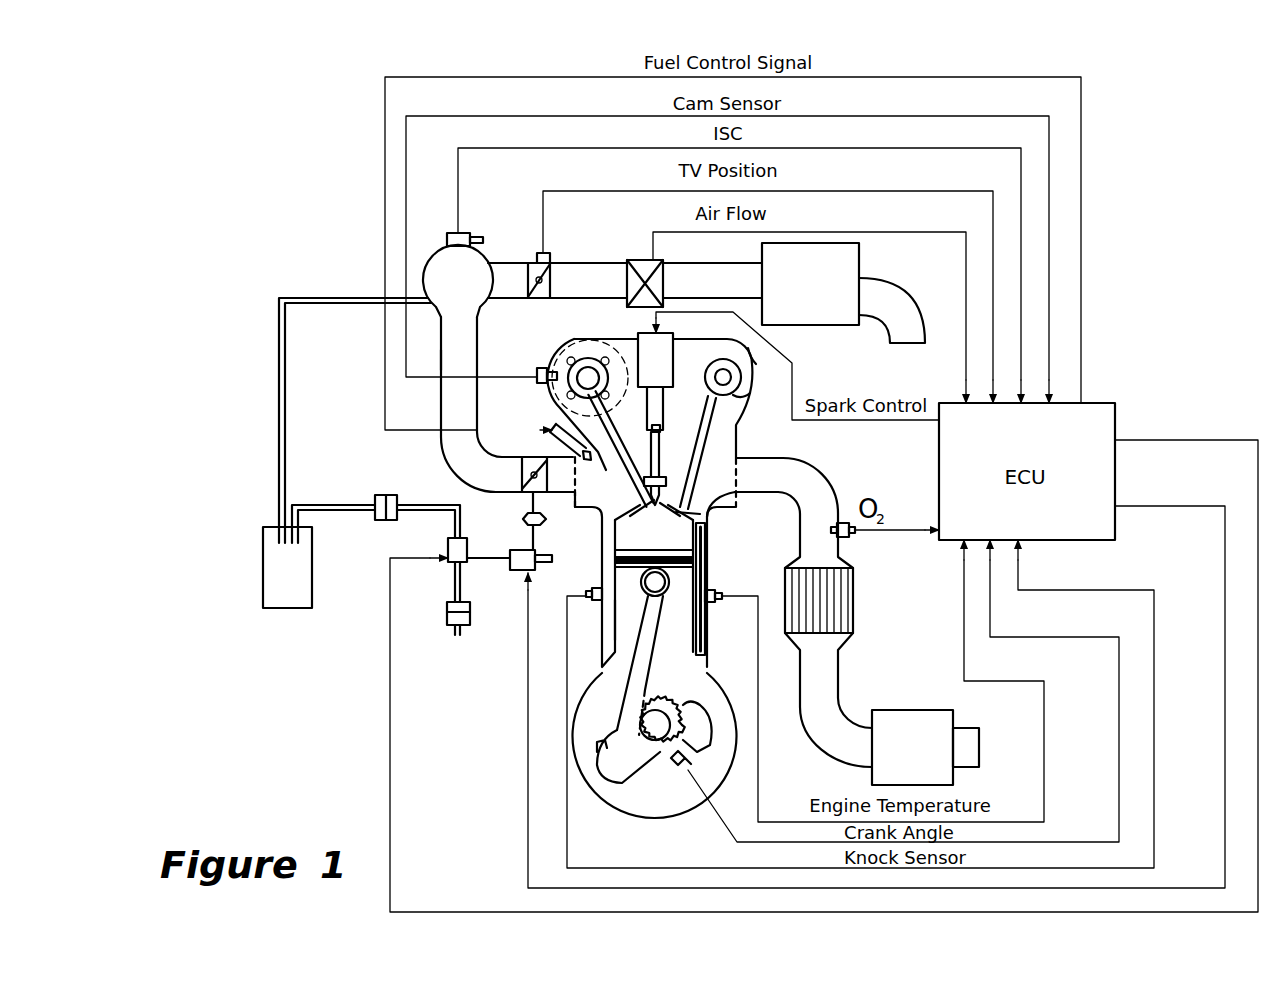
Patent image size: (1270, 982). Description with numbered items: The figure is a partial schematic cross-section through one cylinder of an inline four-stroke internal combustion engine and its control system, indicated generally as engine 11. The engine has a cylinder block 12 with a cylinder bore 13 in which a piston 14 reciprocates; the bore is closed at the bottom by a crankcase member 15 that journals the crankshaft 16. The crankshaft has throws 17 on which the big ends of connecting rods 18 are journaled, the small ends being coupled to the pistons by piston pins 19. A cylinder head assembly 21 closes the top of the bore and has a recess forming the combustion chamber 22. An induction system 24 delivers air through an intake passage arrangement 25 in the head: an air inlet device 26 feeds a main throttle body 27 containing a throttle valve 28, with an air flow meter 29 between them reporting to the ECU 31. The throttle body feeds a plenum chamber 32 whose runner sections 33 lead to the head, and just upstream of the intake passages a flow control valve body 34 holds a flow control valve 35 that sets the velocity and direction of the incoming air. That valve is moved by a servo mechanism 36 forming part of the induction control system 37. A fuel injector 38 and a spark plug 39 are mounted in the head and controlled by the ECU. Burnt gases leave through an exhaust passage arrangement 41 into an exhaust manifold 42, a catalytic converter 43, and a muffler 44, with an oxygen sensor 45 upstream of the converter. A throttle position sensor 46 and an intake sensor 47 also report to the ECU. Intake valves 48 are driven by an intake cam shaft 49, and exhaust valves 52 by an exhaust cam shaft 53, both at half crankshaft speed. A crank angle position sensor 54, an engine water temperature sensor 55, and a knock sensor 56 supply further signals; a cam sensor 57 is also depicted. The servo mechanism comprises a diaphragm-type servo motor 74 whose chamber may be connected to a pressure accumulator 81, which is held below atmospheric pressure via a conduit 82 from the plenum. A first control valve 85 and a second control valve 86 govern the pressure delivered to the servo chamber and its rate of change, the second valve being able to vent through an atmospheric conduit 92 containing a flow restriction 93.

The internal combustion engine 11 is at (1143, 140).
The cylinder block 12 is at (708, 547).
The cylinder bore 13 is at (622, 613).
The piston 14 is at (710, 627).
The crankcase member 15 is at (728, 762).
The crankshaft 16 is at (646, 790).
The throw 17 is at (620, 765).
The connecting rod 18 is at (652, 645).
The piston pin 19 is at (669, 582).
The cylinder head assembly 21 is at (740, 445).
The combustion chamber 22 is at (620, 553).
The induction system 24 is at (440, 402).
The intake passage arrangement 25 is at (647, 513).
The air inlet device 26 is at (860, 262).
The main throttle body 27 is at (538, 300).
The throttle valve 28 is at (536, 258).
The air flow meter 29 is at (646, 260).
The ECU 31 is at (1118, 416).
The plenum chamber 32 is at (432, 247).
The runner section 33 is at (440, 358).
The flow control valve body 34 is at (531, 457).
The flow control valve 35 is at (523, 480).
The servo mechanism 36 is at (502, 642).
The induction control system 37 is at (375, 637).
The fuel injector 38 is at (549, 428).
The spark plug 39 is at (660, 450).
The exhaust passage arrangement 41 is at (713, 490).
The exhaust manifold 42 is at (832, 478).
The catalytic converter 43 is at (855, 606).
The muffler 44 is at (925, 720).
The oxygen sensor 45 is at (853, 537).
The throttle position sensor 46 is at (546, 253).
The pressure and/or temperature sensor 47 is at (468, 232).
The intake valve 48 is at (613, 458).
The intake cam shaft 49 is at (575, 360).
The exhaust valve 52 is at (712, 425).
The exhaust cam shaft 53 is at (750, 388).
The crank angle position sensor 54 is at (760, 360).
The engine water temperature sensor 55 is at (722, 602).
The knock sensor 56 is at (590, 598).
The cam sensor 57 is at (537, 370).
The diaphragm-type servo motor 74 is at (523, 525).
The pressure accumulator 81 is at (277, 610).
The conduit 82 is at (313, 297).
The first control valve 85 is at (517, 573).
The second control valve 86 is at (448, 546).
The atmospheric conduit 92 is at (455, 583).
The flow restriction 93 is at (450, 620).